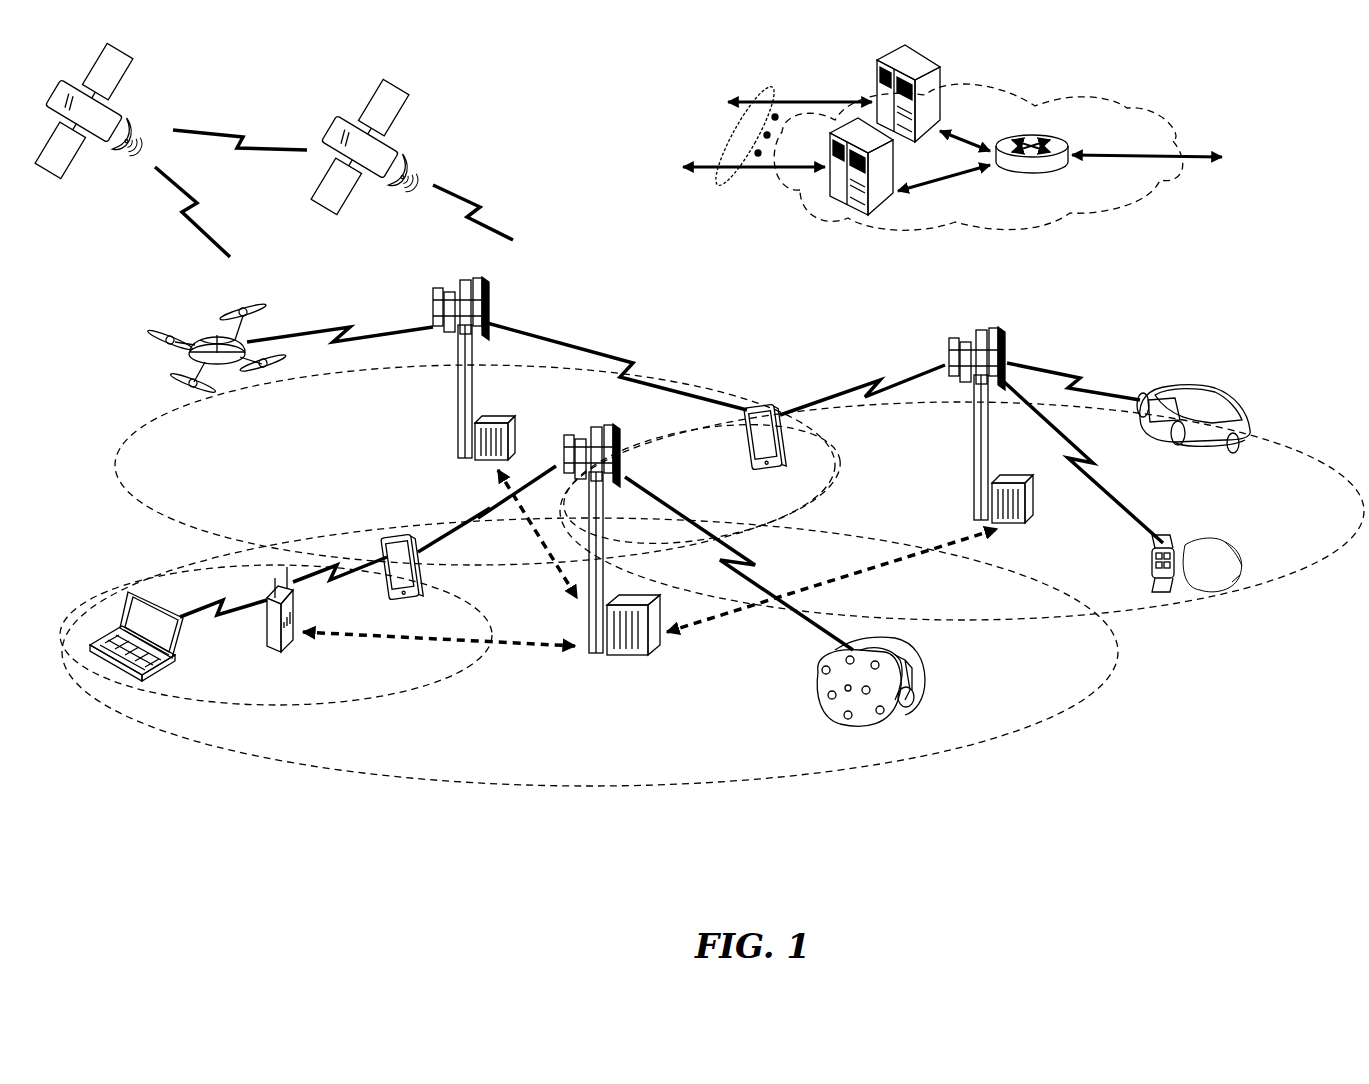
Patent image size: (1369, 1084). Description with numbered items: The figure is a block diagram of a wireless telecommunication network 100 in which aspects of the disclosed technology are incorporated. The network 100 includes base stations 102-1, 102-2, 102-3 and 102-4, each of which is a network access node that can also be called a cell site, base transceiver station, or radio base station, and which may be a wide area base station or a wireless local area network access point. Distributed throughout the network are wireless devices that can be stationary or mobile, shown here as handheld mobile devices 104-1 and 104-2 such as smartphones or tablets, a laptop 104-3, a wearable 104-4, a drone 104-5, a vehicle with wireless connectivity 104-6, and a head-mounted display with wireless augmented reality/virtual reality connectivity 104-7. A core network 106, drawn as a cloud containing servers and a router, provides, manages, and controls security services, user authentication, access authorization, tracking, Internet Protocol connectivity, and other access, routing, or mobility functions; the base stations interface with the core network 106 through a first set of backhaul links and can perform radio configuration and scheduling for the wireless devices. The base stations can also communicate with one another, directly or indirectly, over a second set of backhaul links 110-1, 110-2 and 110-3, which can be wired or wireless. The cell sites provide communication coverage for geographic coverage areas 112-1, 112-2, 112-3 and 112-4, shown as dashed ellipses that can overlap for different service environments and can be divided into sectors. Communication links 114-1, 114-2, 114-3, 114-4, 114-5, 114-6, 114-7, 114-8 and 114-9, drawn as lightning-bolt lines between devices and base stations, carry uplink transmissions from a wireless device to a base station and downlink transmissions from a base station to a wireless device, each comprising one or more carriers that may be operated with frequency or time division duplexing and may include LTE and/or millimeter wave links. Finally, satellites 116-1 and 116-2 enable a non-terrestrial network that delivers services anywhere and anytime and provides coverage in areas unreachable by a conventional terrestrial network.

The wireless telecommunication network 100 is at (1300, 112).
The base station 102-1 is at (590, 657).
The base station 102-2 is at (457, 407).
The base station 102-3 is at (972, 440).
The base station 102-4 is at (268, 640).
The handheld mobile device 104-1 is at (417, 580).
The handheld mobile device 104-2 is at (748, 440).
The laptop 104-3 is at (116, 680).
The wearable 104-4 is at (1173, 540).
The drone 104-5 is at (230, 376).
The vehicle with wireless connectivity 104-6 is at (1217, 393).
The head-mounted display 104-7 is at (927, 673).
The core network 106 is at (1062, 221).
The backhaul link 110-1 is at (335, 634).
The backhaul link 110-2 is at (898, 563).
The backhaul link 110-3 is at (553, 557).
The geographic coverage area 112-1 is at (520, 783).
The geographic coverage area 112-2 is at (400, 693).
The geographic coverage area 112-3 is at (177, 510).
The geographic coverage area 112-4 is at (1277, 444).
The communication link 114-1 is at (757, 563).
The communication link 114-2 is at (480, 512).
The communication link 114-3 is at (208, 612).
The communication link 114-4 is at (337, 583).
The communication link 114-5 is at (347, 327).
The communication link 114-6 is at (628, 362).
The communication link 114-7 is at (870, 380).
The communication link 114-8 is at (1097, 481).
The communication link 114-9 is at (1067, 371).
The satellite 116-1 is at (142, 120).
The satellite 116-2 is at (420, 158).